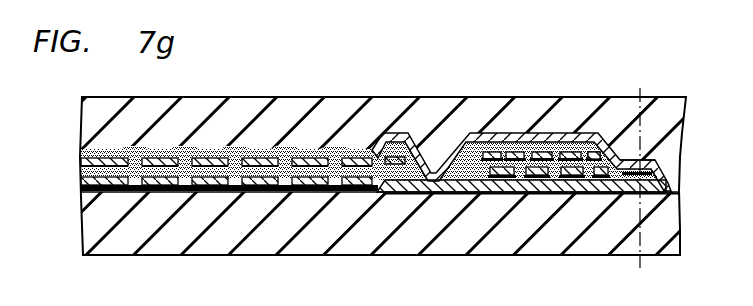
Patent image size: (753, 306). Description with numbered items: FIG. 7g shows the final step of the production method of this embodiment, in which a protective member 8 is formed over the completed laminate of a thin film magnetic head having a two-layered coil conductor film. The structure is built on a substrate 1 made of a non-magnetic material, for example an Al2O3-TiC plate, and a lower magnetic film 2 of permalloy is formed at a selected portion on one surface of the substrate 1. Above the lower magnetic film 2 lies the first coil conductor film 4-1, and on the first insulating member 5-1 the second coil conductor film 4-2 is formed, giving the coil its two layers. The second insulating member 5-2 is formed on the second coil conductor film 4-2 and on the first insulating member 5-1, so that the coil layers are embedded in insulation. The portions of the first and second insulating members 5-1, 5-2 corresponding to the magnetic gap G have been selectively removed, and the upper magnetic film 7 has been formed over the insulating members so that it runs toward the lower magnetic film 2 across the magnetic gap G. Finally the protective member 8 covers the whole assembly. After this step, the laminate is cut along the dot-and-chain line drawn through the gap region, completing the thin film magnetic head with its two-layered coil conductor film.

The substrate 1 is at (668, 228).
The lower magnetic film 2 is at (555, 160).
The first coil conductor film 4-1 is at (505, 160).
The second coil conductor film 4-2 is at (527, 160).
The first insulating member 5-1 is at (612, 163).
The second insulating member 5-2 is at (597, 157).
The upper magnetic film 7 is at (565, 143).
The protective member 8 is at (474, 120).
The magnetic gap G is at (631, 167).